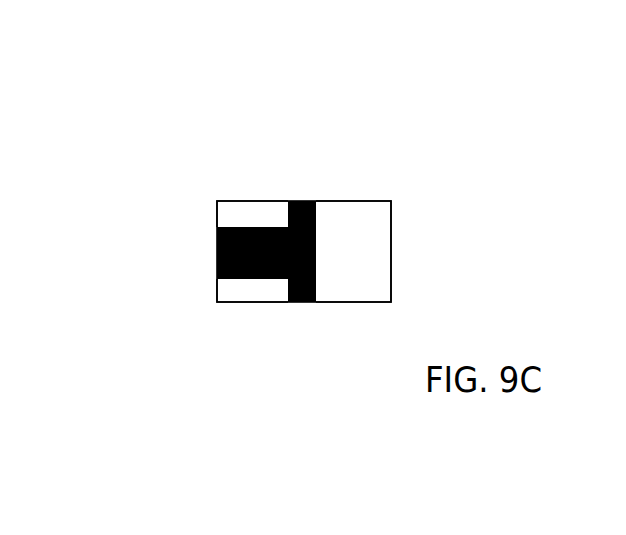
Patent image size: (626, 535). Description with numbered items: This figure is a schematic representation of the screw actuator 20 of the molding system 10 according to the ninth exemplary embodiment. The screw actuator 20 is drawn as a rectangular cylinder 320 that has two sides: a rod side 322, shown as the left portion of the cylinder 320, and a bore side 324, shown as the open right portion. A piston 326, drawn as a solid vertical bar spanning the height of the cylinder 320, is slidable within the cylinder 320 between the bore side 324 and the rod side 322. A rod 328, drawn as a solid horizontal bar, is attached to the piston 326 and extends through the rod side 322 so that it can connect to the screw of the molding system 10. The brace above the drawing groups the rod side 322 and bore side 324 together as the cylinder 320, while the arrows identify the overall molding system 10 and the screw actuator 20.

The molding system 10 is at (532, 86).
The screw actuator 20 is at (422, 151).
The cylinder 320 is at (325, 78).
The rod side 322 is at (252, 213).
The bore side 324 is at (364, 213).
The piston 326 is at (300, 302).
The rod 328 is at (263, 279).